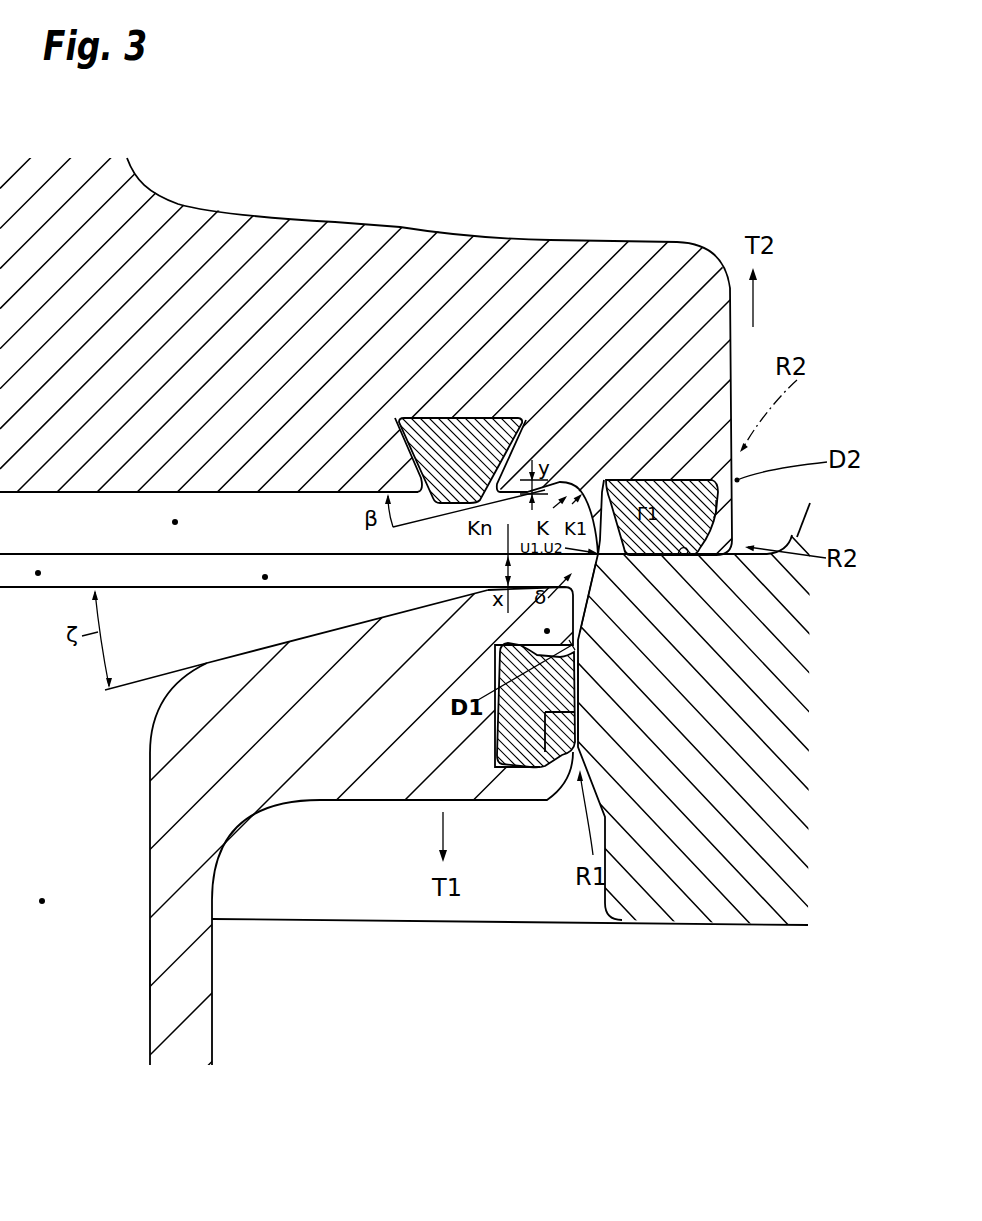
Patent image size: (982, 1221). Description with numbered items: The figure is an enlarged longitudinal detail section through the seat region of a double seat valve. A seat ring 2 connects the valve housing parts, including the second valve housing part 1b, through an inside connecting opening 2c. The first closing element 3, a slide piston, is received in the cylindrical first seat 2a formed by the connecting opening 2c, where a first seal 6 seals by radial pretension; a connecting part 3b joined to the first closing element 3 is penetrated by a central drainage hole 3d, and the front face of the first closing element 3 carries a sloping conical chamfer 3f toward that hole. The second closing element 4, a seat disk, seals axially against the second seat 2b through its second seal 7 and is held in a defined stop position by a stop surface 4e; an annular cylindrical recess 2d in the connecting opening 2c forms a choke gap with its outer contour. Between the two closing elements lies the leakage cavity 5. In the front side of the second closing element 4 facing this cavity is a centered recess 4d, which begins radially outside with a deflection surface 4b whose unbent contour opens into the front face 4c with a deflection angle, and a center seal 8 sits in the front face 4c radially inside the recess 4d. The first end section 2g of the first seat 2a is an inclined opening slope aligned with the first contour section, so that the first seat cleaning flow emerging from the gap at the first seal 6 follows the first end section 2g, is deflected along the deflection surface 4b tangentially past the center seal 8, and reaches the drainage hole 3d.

The second valve housing part 1b is at (733, 457).
The seat ring 2 is at (603, 717).
The first seat 2a is at (540, 755).
The second seat 2b is at (688, 556).
The connecting opening 2c is at (383, 572).
The annular cylindrical recess 2d is at (768, 557).
The first end section 2g is at (594, 588).
The first closing element 3 is at (403, 700).
The connecting part 3b is at (185, 975).
The drainage hole 3d is at (42, 888).
The sloping conical chamfer 3f is at (248, 656).
The second closing element 4 is at (470, 375).
The deflection surface 4b is at (672, 481).
The front face 4c is at (148, 494).
The centered recess 4d is at (191, 524).
The stop surface 4e is at (600, 577).
The leakage cavity 5 is at (39, 600).
The first seal 6 is at (523, 717).
The second seal 7 is at (620, 490).
The center seal 8 is at (438, 440).